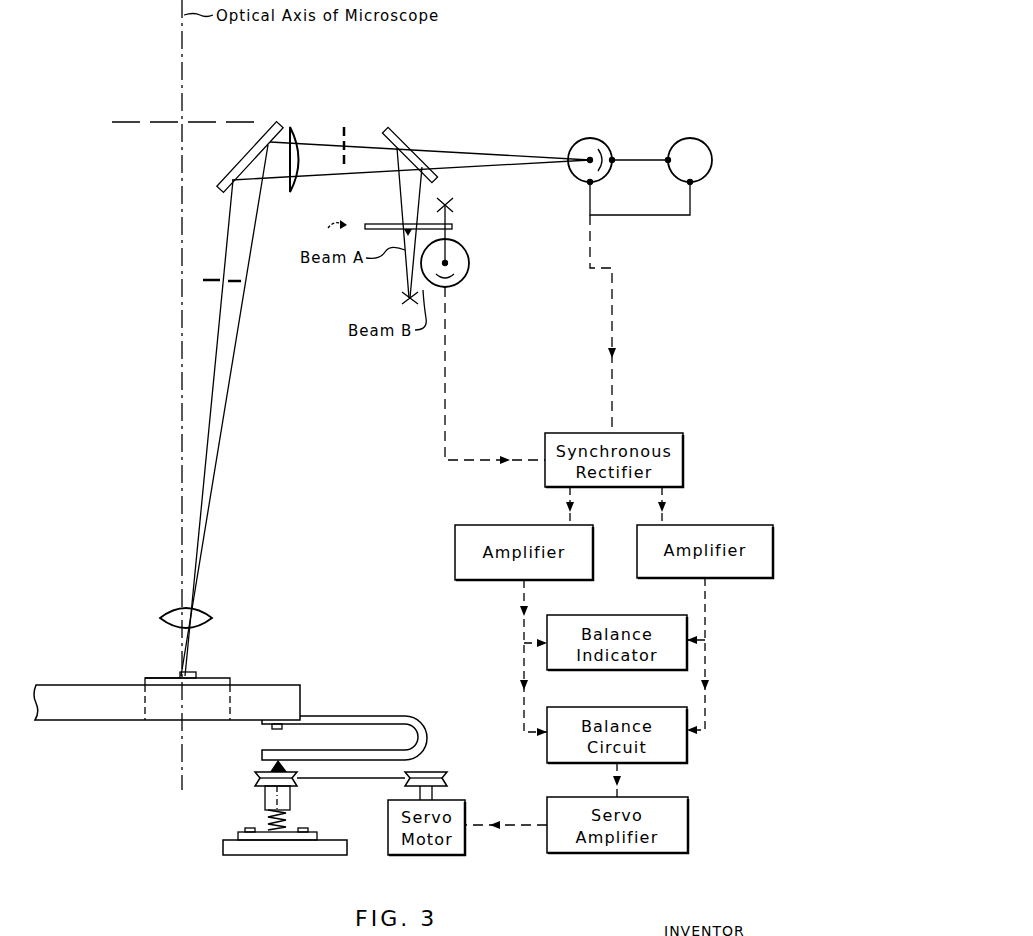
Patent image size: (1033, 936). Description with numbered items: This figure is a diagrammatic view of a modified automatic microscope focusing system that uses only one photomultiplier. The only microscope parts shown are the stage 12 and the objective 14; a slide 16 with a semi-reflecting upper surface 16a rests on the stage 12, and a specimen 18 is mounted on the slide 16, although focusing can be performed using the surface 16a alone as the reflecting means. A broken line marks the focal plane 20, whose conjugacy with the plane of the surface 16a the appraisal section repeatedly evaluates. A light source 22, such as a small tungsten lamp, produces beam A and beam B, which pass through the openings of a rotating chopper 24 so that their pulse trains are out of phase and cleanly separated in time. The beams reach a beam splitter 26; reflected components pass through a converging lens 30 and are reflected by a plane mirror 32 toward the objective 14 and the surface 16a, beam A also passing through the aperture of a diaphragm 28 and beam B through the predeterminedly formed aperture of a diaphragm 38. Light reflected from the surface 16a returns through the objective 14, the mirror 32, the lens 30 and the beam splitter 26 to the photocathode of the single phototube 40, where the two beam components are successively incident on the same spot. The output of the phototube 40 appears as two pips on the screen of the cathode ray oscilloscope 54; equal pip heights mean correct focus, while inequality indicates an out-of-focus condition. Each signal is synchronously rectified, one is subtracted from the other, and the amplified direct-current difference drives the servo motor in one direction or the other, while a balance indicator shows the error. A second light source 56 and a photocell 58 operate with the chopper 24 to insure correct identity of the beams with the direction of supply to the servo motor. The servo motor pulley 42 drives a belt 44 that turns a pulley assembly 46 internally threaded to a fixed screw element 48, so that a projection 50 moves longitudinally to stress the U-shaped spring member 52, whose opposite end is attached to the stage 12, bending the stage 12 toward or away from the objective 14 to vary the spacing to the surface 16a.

The stage 12 is at (96, 710).
The objective 14 is at (200, 608).
The slide 16 is at (232, 678).
The semi-reflecting upper surface 16a is at (152, 677).
The specimen 18 is at (196, 673).
The focal plane 20 is at (121, 122).
The light source 22 is at (402, 299).
The rotating chopper 24 is at (378, 222).
The beam splitter 26 is at (389, 131).
The diaphragm 28 is at (346, 127).
The converging lens 30 is at (292, 127).
The plane mirror 32 is at (230, 190).
The diaphragm 38 is at (210, 280).
The phototube 40 is at (590, 138).
The servo motor pulley 42 is at (435, 772).
The belt 44 is at (328, 778).
The pulley assembly 46 is at (258, 782).
The fixed screw element 48 is at (266, 824).
The projection 50 is at (268, 768).
The U-shaped spring member 52 is at (303, 752).
The cathode ray oscilloscope 54 is at (702, 140).
The second light source 56 is at (449, 203).
The photocell 58 is at (469, 262).